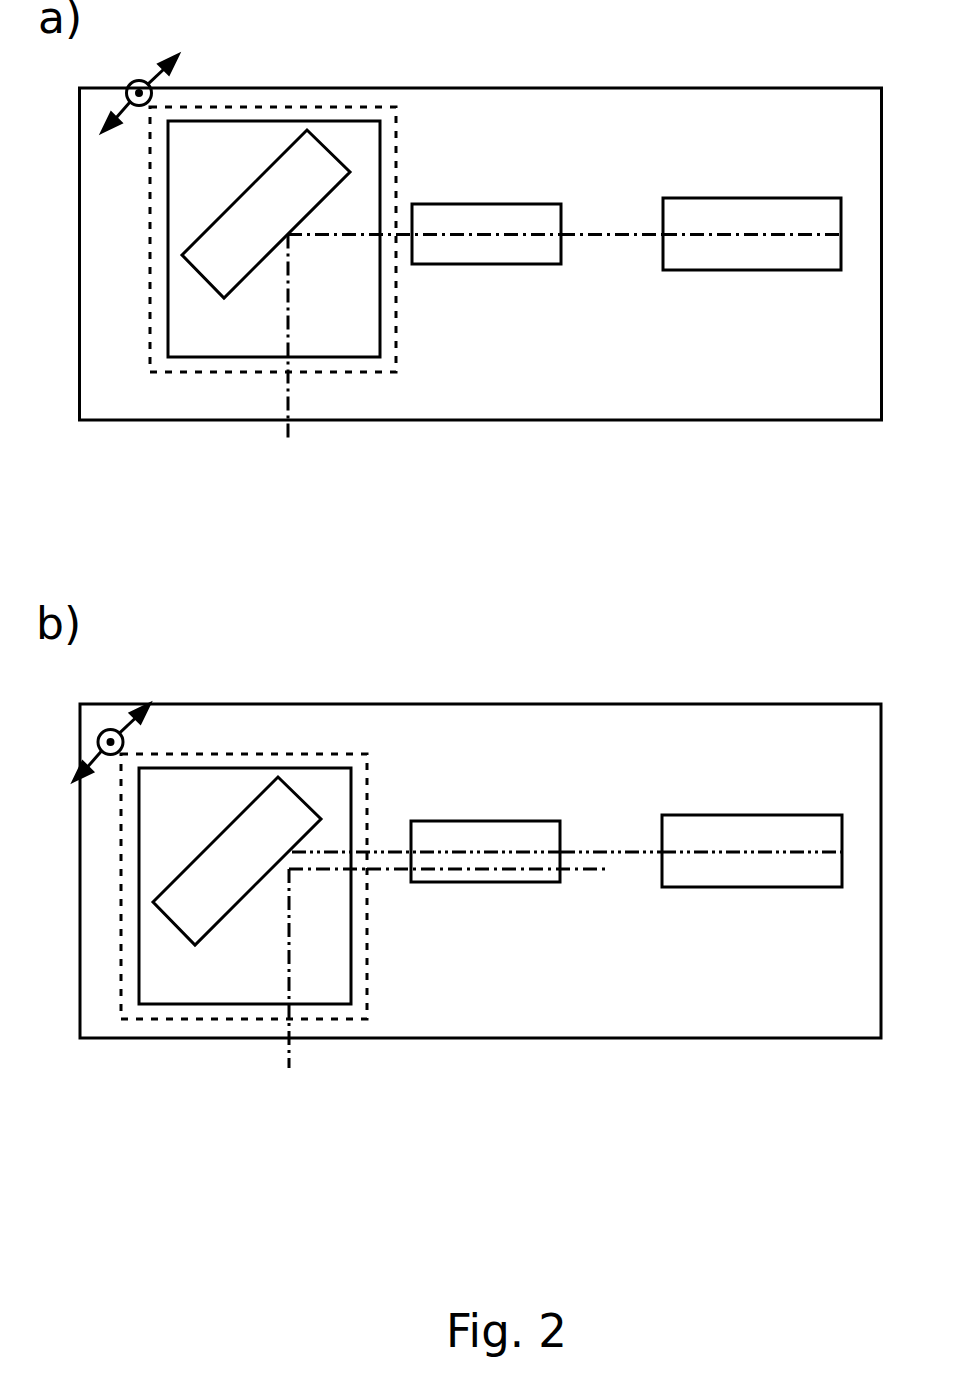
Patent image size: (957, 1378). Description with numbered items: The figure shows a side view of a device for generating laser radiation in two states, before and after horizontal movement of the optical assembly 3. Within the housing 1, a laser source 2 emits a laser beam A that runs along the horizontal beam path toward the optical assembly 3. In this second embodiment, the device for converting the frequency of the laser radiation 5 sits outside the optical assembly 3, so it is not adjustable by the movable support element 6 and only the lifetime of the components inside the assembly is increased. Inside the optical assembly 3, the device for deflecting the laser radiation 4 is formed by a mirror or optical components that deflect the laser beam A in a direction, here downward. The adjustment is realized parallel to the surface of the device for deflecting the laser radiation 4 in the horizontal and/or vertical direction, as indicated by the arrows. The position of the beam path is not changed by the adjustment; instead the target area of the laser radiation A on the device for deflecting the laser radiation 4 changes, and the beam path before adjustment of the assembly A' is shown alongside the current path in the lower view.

The housing 1 is at (481, 519).
The light source / detector unit 2 is at (730, 270).
The optical assembly 3 is at (397, 348).
The device for deflecting the laser radiation 4 is at (212, 500).
The device for converting the frequency of the laser radiation 5 is at (487, 263).
The movable support element 6 is at (564, 602).
The laser beam A is at (612, 569).
The beam path of the laser radiation before adjustment of the assembly A' is at (488, 898).